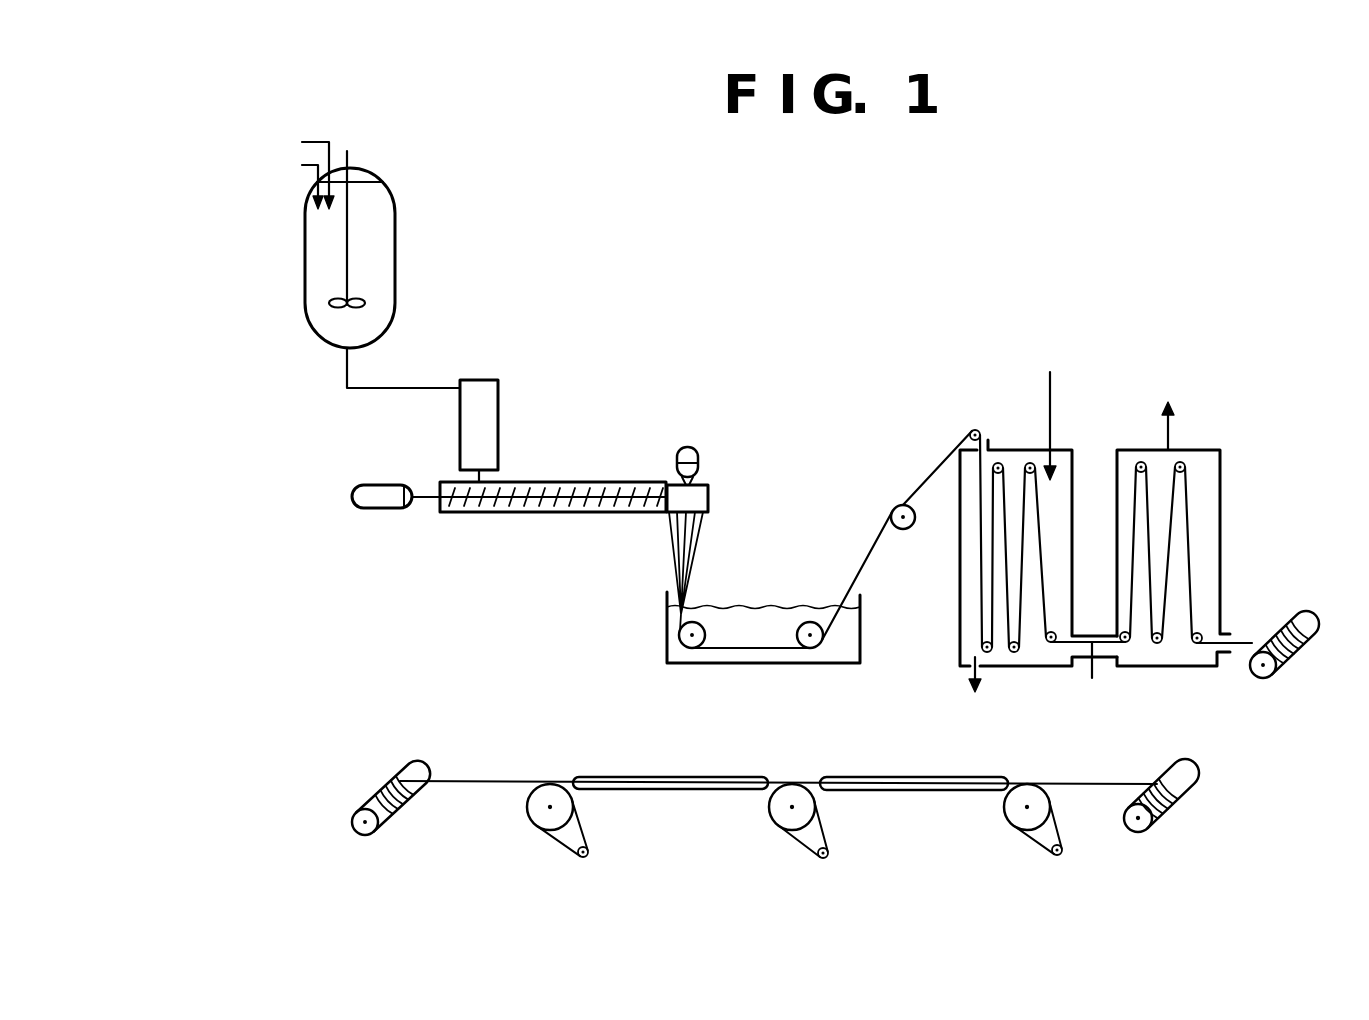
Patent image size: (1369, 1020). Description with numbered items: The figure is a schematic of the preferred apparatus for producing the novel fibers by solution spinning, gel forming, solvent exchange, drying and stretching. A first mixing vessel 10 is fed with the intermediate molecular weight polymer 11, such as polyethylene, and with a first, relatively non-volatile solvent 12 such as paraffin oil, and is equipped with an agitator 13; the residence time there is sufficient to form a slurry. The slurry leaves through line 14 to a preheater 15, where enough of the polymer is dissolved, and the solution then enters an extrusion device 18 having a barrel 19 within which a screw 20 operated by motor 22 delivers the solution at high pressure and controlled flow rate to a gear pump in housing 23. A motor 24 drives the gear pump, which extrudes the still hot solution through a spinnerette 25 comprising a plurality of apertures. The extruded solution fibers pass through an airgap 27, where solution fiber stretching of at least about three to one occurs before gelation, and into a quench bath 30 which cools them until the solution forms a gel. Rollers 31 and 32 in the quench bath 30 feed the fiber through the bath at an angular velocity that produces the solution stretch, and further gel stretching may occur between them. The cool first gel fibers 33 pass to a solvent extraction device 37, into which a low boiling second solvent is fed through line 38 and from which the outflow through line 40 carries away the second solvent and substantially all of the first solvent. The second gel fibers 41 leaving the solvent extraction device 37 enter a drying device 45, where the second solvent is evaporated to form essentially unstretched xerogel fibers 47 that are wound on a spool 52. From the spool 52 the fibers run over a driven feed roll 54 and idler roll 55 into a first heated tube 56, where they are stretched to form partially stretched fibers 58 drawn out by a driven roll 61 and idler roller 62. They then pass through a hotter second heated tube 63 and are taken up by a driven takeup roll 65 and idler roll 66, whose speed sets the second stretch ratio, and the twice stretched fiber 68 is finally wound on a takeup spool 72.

The first mixing vessel 10 is at (395, 223).
The intermediate molecular weight polymer 11 is at (320, 142).
The first relatively non-volatile solvent 12 is at (305, 167).
The stirrer 13 is at (345, 243).
The line 14 is at (420, 388).
The preheater 15 is at (498, 410).
The extrusion device 18 is at (491, 515).
The barrel 19 is at (578, 513).
The screw 20 is at (623, 500).
The motor 22 is at (388, 505).
The gear pump housing 23 is at (698, 480).
The motor 24 is at (690, 445).
The spinnerette 25 is at (703, 513).
The airgap 27 is at (696, 573).
The quench bath 30 is at (665, 643).
The roller 31 is at (697, 640).
The roller 32 is at (808, 630).
The first gel fibers 33 is at (868, 545).
The solvent extraction device 37 is at (960, 572).
The line 38 is at (1053, 392).
The line 40 is at (970, 668).
The second gel fibers 41 is at (1092, 675).
The drying device 45 is at (1220, 522).
The xerogel fibers 47 is at (1243, 642).
The spool 52 is at (1262, 670).
The driven feed roll 54 is at (540, 815).
The idler roll 55 is at (588, 856).
The first heated tube 56 is at (665, 776).
The partially stretched fibers 58 is at (782, 782).
The driven roll 61 is at (803, 812).
The idler roller 62 is at (830, 853).
The second heated tube 63 is at (880, 777).
The driven takeup roll 65 is at (1010, 823).
The idler roll 66 is at (1060, 854).
The twice stretched fiber 68 is at (1087, 783).
The takeup spool 72 is at (1145, 827).